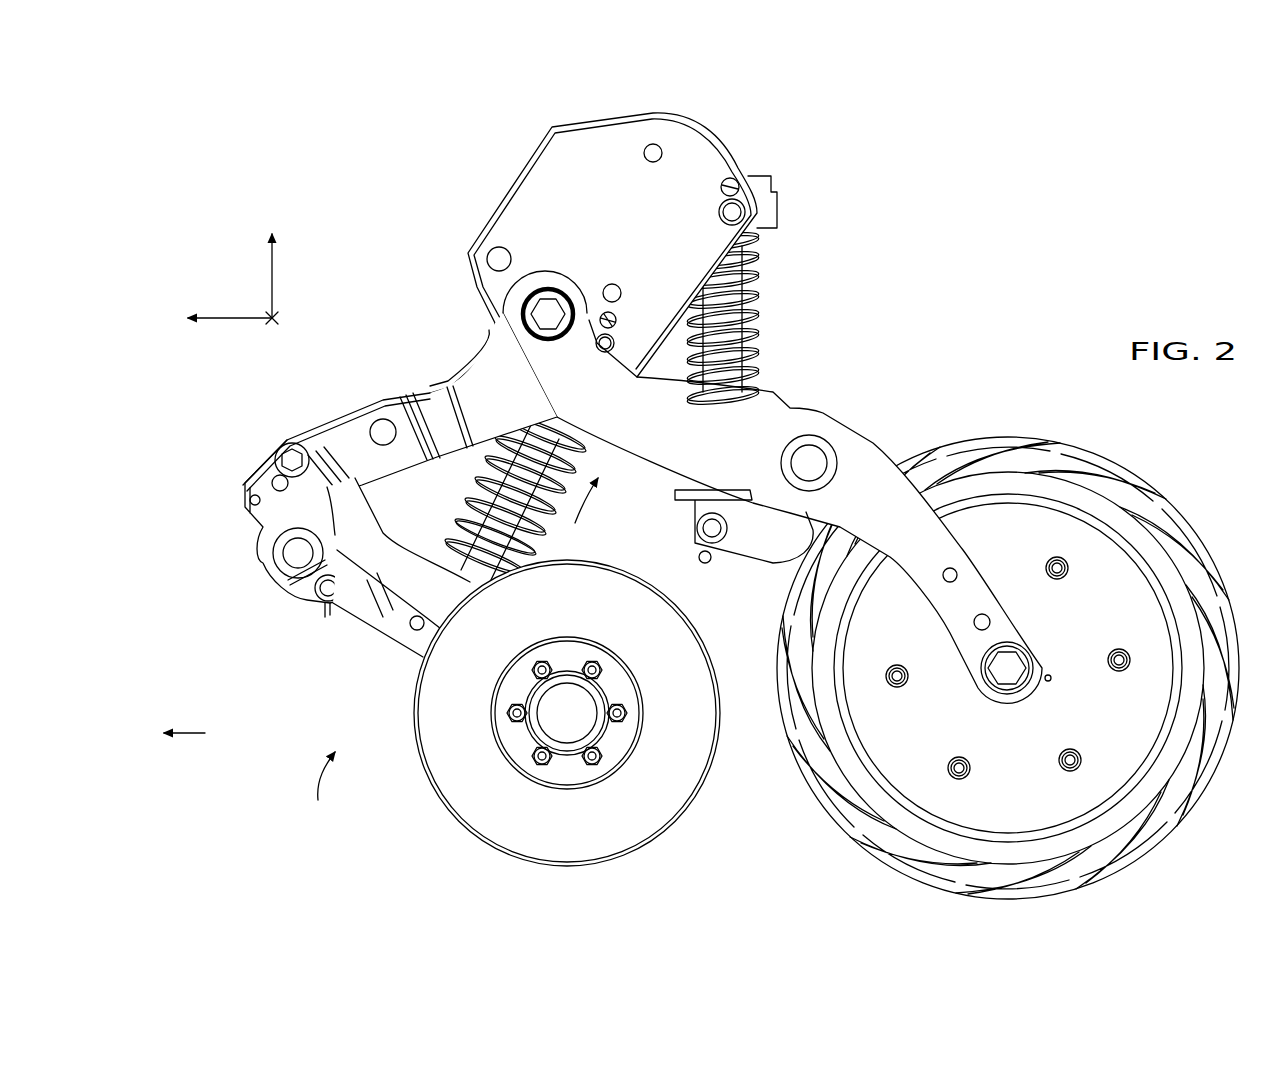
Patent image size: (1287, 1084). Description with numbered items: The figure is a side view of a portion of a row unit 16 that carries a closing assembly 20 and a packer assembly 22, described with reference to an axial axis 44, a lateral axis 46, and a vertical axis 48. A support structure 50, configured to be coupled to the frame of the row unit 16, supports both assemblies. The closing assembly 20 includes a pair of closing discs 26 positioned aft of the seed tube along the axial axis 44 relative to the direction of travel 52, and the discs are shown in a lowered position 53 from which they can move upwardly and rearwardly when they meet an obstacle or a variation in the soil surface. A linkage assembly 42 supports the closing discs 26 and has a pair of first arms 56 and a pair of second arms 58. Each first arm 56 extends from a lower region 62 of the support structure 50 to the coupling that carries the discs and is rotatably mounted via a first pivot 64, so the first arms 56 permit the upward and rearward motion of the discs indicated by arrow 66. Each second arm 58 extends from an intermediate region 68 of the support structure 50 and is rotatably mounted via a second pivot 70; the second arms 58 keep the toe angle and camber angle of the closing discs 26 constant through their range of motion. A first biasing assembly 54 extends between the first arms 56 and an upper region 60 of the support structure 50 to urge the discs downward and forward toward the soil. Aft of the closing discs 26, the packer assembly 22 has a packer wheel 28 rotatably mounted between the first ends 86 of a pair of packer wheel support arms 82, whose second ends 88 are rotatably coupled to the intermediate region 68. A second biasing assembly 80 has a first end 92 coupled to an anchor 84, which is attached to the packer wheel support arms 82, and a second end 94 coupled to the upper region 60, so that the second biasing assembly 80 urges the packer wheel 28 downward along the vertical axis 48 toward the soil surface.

The row unit 16 is at (634, 244).
The closing assembly 20 is at (536, 722).
The packer assembly 22 is at (1008, 680).
The closing discs 26 is at (625, 851).
The packer wheel 28 is at (1118, 466).
The linkage assembly 42 is at (376, 506).
The axial axis 44 is at (263, 285).
The lateral axis 46 is at (280, 319).
The vertical axis 48 is at (273, 276).
The support structure 50 is at (612, 253).
The direction of travel 52 is at (196, 733).
The lowered position 53 is at (319, 792).
The first biasing assembly 54 is at (498, 512).
The first arms 56 is at (400, 631).
The second arms 58 is at (392, 549).
The upper region of the support structure 60 is at (700, 173).
The lower region of the support structure 62 is at (278, 528).
The first pivot 64 is at (296, 554).
The arrow 66 is at (580, 519).
The intermediate region of the support structure 68 is at (426, 389).
The second pivot 70 is at (291, 458).
The second biasing assembly 80 is at (729, 325).
The packer wheel support arms 82 is at (793, 508).
The anchor 84 is at (733, 555).
The first ends of the packer wheel support arms 86 is at (1012, 634).
The second ends of the packer wheel support arms 88 is at (566, 363).
The first end of the second biasing assembly 92 is at (700, 519).
The second end of the second biasing assembly 94 is at (762, 191).